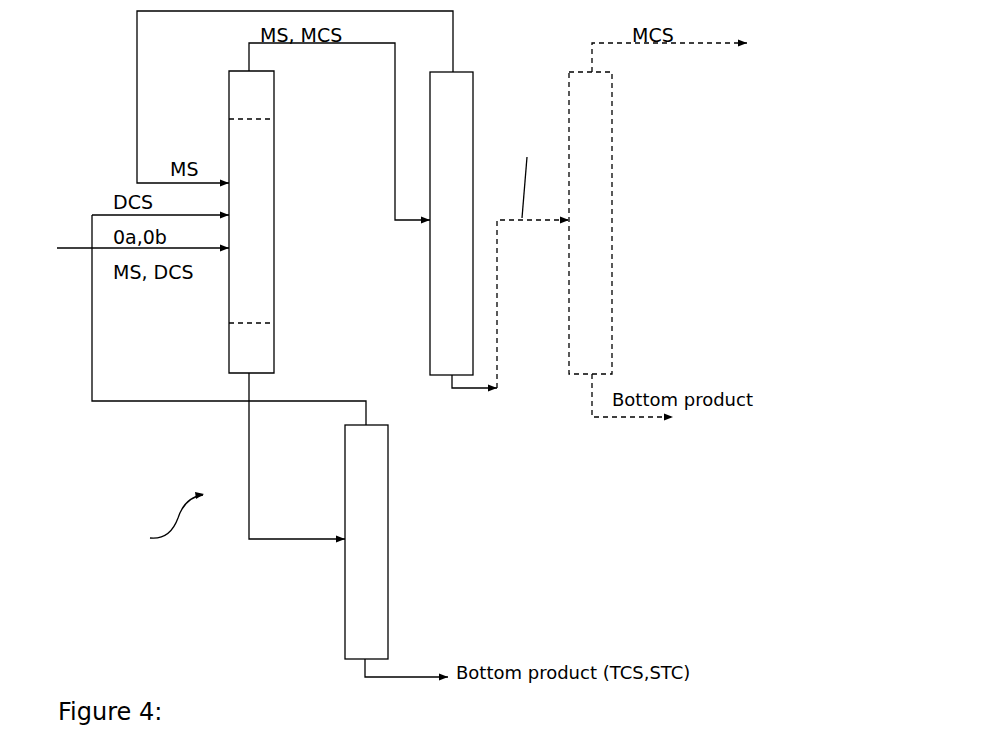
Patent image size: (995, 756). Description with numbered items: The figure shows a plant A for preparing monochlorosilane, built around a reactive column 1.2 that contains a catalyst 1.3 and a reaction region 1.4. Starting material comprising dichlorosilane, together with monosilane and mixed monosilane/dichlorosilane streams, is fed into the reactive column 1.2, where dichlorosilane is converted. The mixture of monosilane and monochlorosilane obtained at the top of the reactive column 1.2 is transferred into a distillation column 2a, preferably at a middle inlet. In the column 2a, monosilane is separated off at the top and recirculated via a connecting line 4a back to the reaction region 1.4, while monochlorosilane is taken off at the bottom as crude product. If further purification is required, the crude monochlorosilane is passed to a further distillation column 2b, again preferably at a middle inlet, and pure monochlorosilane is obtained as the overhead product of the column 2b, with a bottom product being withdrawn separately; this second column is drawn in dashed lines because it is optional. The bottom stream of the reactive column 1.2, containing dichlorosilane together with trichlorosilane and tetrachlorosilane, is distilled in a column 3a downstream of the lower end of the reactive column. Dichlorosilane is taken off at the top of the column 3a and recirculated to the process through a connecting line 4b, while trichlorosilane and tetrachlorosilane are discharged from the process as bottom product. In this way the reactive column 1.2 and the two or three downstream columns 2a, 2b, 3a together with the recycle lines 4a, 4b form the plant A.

The reactive column 1.2 is at (274, 339).
The catalyst 1.3 is at (257, 274).
The reaction region 1.4 is at (274, 171).
The distillation column 2a is at (430, 295).
The further distillation column 2b is at (569, 295).
The distillation column 3a is at (390, 519).
The connecting line 4a is at (137, 23).
The connecting line 4b is at (182, 402).
The plant A is at (163, 521).